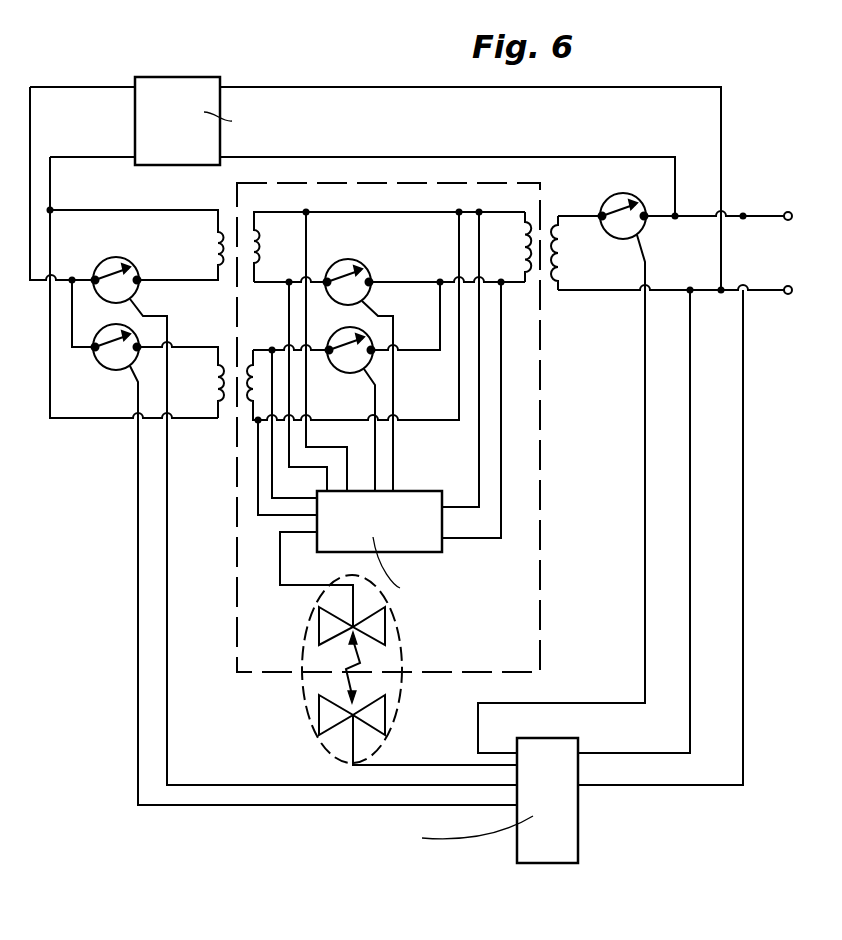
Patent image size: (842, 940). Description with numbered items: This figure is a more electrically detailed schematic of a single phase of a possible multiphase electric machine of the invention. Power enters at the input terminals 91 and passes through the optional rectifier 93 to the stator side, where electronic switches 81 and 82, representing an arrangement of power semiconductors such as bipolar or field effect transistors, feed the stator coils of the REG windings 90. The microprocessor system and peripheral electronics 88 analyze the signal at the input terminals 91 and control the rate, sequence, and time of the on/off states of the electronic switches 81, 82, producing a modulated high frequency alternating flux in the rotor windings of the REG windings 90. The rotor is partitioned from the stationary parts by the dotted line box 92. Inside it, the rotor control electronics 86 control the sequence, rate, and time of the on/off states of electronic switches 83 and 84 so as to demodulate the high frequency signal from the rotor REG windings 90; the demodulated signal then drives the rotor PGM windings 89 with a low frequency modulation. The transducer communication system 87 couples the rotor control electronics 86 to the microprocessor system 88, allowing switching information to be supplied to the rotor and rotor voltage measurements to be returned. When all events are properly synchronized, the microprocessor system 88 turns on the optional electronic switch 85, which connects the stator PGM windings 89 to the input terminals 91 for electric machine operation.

The electronic switch 81 is at (117, 257).
The electronic switch 82 is at (112, 323).
The electronic switch 83 is at (365, 266).
The electronic switch 84 is at (333, 334).
The optional electronic switch 85 is at (621, 192).
The rotor control electronics 86 is at (440, 491).
The transducer communication system 87 is at (400, 645).
The microprocessor system and peripheral electronics 88 is at (578, 838).
The PGM windings 89 is at (524, 255).
The REG windings 90 is at (221, 233).
The input terminals 91 is at (788, 211).
The dotted line box 92 is at (540, 507).
The optional rectifier 93 is at (178, 77).